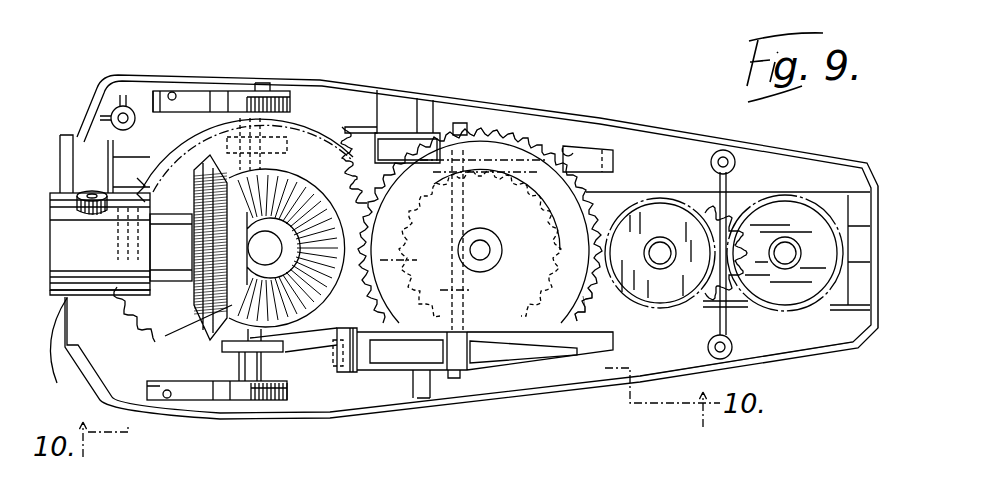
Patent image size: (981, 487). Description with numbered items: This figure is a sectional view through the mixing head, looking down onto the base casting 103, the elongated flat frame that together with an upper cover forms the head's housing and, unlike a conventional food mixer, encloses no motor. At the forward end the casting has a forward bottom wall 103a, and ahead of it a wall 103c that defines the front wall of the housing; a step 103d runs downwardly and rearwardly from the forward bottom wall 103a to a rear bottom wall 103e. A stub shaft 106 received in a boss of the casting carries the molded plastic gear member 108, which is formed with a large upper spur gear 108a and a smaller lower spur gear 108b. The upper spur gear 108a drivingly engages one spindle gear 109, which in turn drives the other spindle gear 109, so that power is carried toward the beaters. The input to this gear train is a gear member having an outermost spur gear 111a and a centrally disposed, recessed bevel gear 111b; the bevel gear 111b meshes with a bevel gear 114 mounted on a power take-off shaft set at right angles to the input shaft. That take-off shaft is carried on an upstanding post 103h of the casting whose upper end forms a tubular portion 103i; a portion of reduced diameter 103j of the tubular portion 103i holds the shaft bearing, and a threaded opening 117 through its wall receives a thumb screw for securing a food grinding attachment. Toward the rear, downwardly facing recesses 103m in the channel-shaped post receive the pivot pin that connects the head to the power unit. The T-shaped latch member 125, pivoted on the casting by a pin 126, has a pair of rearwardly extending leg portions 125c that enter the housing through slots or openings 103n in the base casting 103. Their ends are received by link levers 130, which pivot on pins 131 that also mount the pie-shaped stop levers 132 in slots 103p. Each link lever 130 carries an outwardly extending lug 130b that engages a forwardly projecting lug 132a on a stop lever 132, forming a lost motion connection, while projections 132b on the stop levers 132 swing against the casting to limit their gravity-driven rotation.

The base casting 103 is at (661, 119).
The forward bottom wall 103a is at (777, 347).
The wall 103c is at (887, 197).
The step 103d is at (421, 399).
The rear bottom wall 103e is at (356, 402).
The upstanding post 103h is at (60, 357).
The tubular portion 103i is at (100, 244).
The portion of reduced diameter 103j is at (167, 227).
The downwardly facing recesses 103m is at (575, 146).
The slots or openings 103n is at (537, 362).
The slots 103p is at (168, 93).
The stub shaft 106 is at (485, 257).
The gear member 108 is at (544, 126).
The upper spur gear 108a is at (495, 132).
The lower spur gear 108b is at (600, 318).
The spindle gear 109 is at (727, 240).
The outermost spur gear 111a is at (377, 132).
The bevel gear 111b is at (312, 180).
The bevel gear 114 is at (163, 331).
The threaded opening 117 is at (90, 190).
The latch member 125 is at (407, 140).
The leg portions 125c is at (389, 133).
The pin 126 is at (488, 237).
The link levers 130 is at (338, 163).
The outwardly extending lug 130b is at (248, 401).
The pins 131 is at (262, 87).
The stop levers 132 is at (200, 95).
The forwardly projecting lug 132a is at (275, 401).
The projections 132b is at (152, 98).